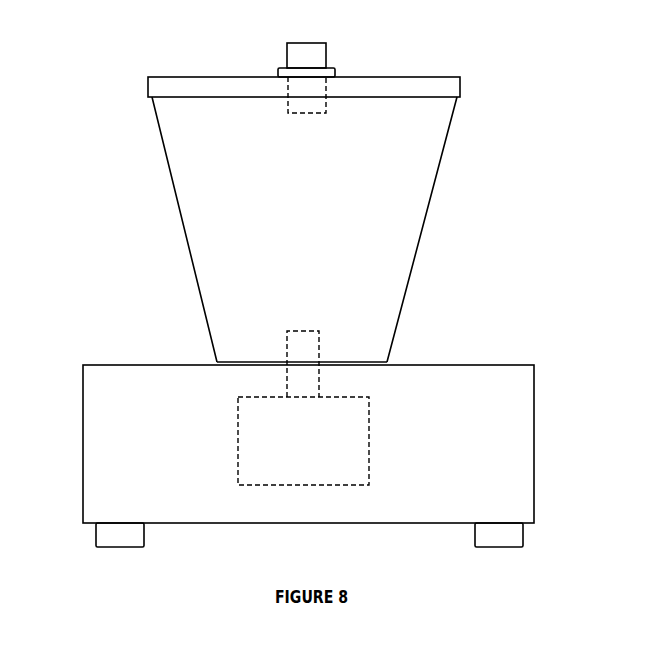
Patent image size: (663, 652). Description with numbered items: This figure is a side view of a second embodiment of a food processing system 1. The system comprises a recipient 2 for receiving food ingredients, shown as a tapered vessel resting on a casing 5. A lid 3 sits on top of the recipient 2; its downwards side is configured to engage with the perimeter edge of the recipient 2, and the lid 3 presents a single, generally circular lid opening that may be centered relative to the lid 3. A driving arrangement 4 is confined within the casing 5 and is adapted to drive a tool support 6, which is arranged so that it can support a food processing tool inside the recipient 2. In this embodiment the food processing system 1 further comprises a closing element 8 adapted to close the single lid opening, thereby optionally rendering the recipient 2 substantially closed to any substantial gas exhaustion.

The food processing system 1 is at (63, 46).
The recipient 2 is at (315, 229).
The lid 3 is at (307, 74).
The driving arrangement 4 is at (321, 441).
The casing 5 is at (326, 456).
The tool support 6 is at (320, 359).
The closing element 8 is at (321, 74).